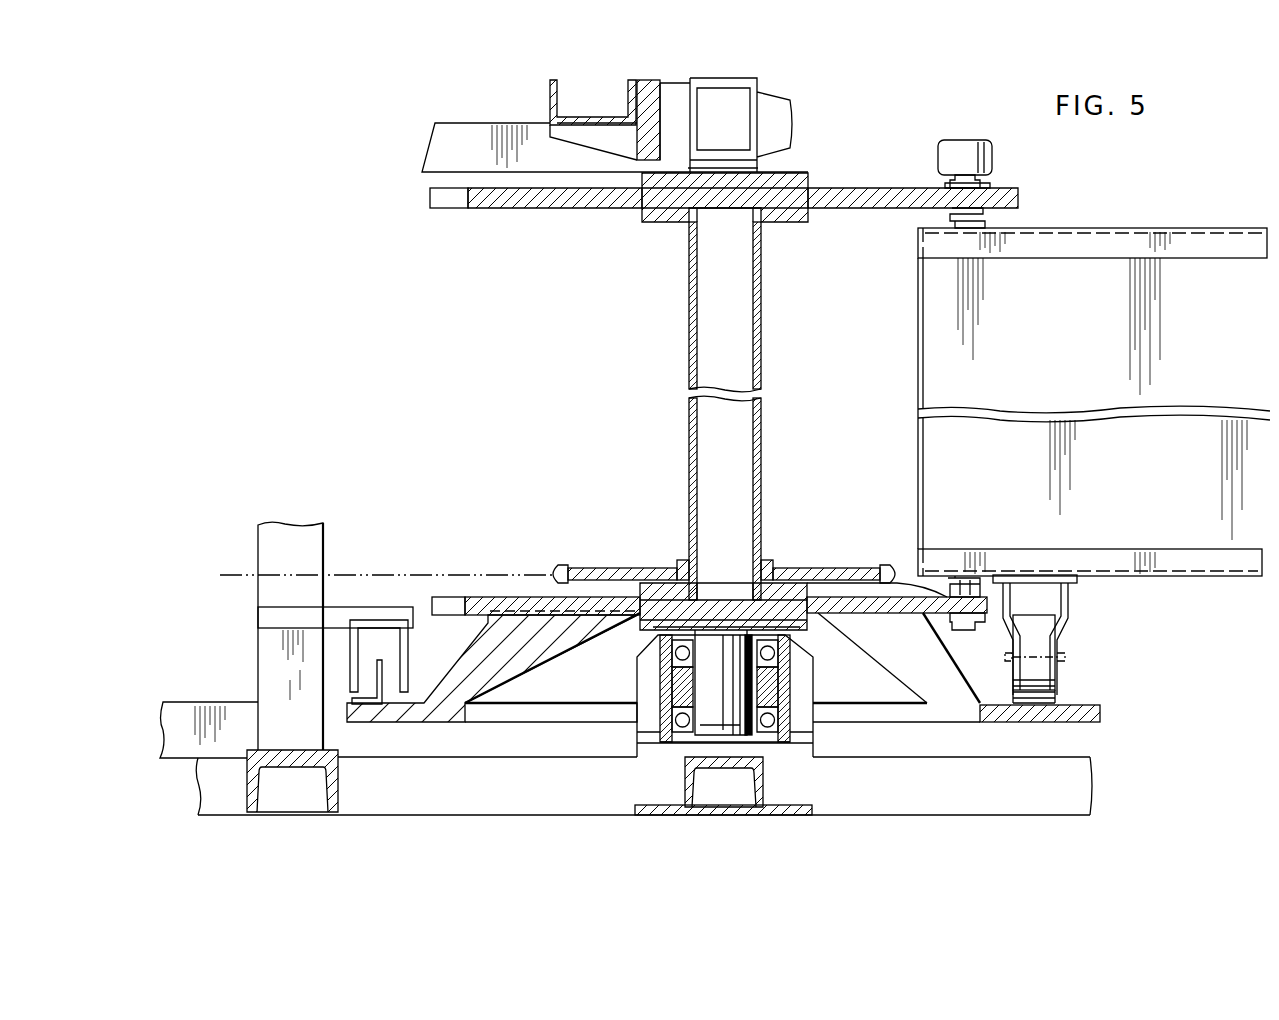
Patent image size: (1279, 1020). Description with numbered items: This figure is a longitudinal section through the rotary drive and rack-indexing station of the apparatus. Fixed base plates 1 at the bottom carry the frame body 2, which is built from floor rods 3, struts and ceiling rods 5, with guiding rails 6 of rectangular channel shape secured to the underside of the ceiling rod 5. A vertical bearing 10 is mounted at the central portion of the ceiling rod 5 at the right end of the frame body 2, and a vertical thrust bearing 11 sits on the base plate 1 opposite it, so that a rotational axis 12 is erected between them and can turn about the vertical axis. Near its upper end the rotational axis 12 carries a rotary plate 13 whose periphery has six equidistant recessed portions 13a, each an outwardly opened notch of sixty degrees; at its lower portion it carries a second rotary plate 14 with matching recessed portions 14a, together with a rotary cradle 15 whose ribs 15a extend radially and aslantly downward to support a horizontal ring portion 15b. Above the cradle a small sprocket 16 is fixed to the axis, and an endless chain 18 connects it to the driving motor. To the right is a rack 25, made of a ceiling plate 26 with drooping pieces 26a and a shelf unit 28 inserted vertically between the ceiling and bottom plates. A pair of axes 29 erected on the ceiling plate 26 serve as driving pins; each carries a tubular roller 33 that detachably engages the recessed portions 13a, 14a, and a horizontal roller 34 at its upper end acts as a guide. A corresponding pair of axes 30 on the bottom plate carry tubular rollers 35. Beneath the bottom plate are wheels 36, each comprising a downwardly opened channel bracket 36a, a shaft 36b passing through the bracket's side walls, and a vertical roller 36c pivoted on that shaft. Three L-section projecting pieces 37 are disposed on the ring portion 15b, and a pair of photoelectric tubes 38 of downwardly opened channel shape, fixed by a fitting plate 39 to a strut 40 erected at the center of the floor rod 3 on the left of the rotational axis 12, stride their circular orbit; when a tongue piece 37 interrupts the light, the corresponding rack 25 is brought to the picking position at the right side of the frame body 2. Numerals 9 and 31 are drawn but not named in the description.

The base plate 1 is at (807, 805).
The frame body 2 is at (432, 124).
The floor rod 3 is at (338, 780).
The ceiling rod 5 is at (550, 100).
The guiding rail 6 is at (478, 130).
The bar 9 is at (222, 705).
The vertical bearing 10 is at (790, 125).
The vertical thrust bearing 11 is at (800, 680).
The rotational axis 12 is at (761, 460).
The rotary plate 13 is at (724, 216).
The recessed portion 13a is at (452, 208).
The rotary plate 14 is at (703, 578).
The recessed portion 14a is at (445, 597).
The rotary cradle 15 is at (761, 683).
The rib 15a is at (598, 630).
The horizontal ring portion 15b is at (1100, 713).
The sprocket 16 is at (618, 568).
The endless chain 18 is at (383, 575).
The rack 25 is at (1235, 228).
The ceiling plate 26 is at (1092, 384).
The piece 26a is at (1113, 258).
The shelf unit 28 is at (920, 348).
The axis 29 is at (950, 182).
The axis 30 is at (966, 630).
The bolt 31 is at (985, 222).
The tubular roller 33 is at (988, 188).
The horizontal roller 34 is at (938, 155).
The roller 35 is at (912, 582).
The wheel 36 is at (1065, 639).
The bracket 36a is at (1068, 590).
The shaft 36b is at (1065, 657).
The vertical roller 36c is at (1058, 690).
The projecting piece 37 is at (383, 665).
The photoelectric tube 38 is at (398, 686).
The fitting plate 39 is at (337, 630).
The strut 40 is at (258, 550).